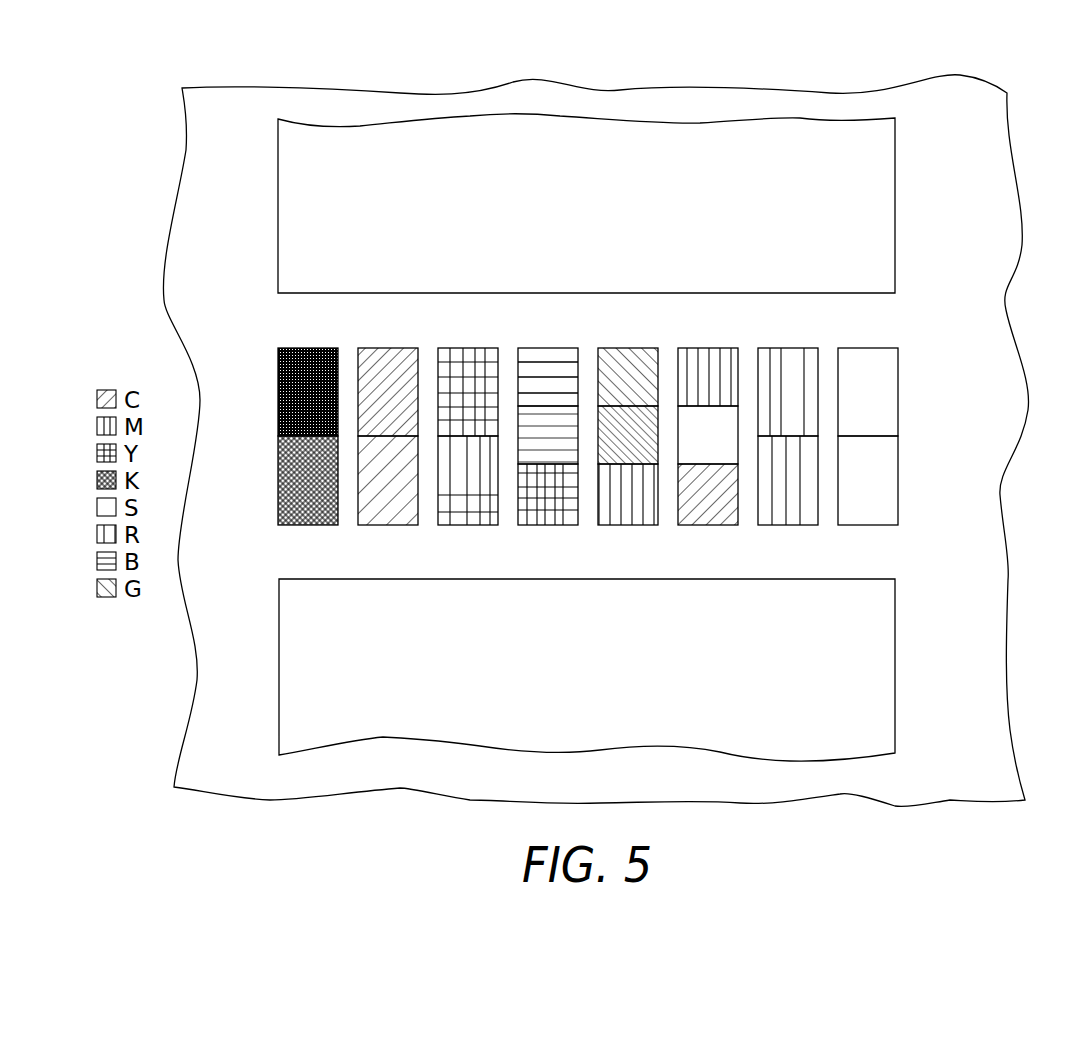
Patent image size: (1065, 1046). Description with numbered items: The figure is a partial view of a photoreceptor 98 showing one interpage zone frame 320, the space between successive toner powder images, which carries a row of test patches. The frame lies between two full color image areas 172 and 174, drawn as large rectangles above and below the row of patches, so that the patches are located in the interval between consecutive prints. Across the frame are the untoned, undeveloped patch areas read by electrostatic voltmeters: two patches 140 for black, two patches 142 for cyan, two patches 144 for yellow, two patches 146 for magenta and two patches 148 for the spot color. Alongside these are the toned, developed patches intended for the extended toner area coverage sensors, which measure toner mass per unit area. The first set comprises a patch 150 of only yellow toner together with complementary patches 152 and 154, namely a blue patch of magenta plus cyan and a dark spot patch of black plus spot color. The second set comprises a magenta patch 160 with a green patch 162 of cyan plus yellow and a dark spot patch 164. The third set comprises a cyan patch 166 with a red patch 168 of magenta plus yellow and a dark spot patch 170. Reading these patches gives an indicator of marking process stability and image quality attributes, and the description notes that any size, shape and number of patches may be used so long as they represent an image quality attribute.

The print medium sheet 98 is at (1000, 540).
The black untoned patches 140 is at (312, 350).
The cyan untoned patches 142 is at (400, 352).
The yellow untoned patches 144 is at (485, 352).
The magenta untoned patches 146 is at (783, 517).
The spot color untoned patches 148 is at (865, 517).
The yellow toned patch 150 is at (530, 518).
The blue complementary toned patch 152 is at (527, 441).
The dark spot complementary toned patch 154 is at (534, 440).
The magenta toned patch 160 is at (645, 515).
The green complementary toned patch 162 is at (640, 437).
The dark spot complementary toned patch 164 is at (635, 440).
The cyan toned patch 166 is at (706, 515).
The red complementary toned patch 168 is at (727, 433).
The dark spot complementary toned patch 170 is at (717, 436).
The full color image area 172 is at (886, 658).
The full color image area 174 is at (888, 173).
The interpage zone frame 320 is at (272, 555).